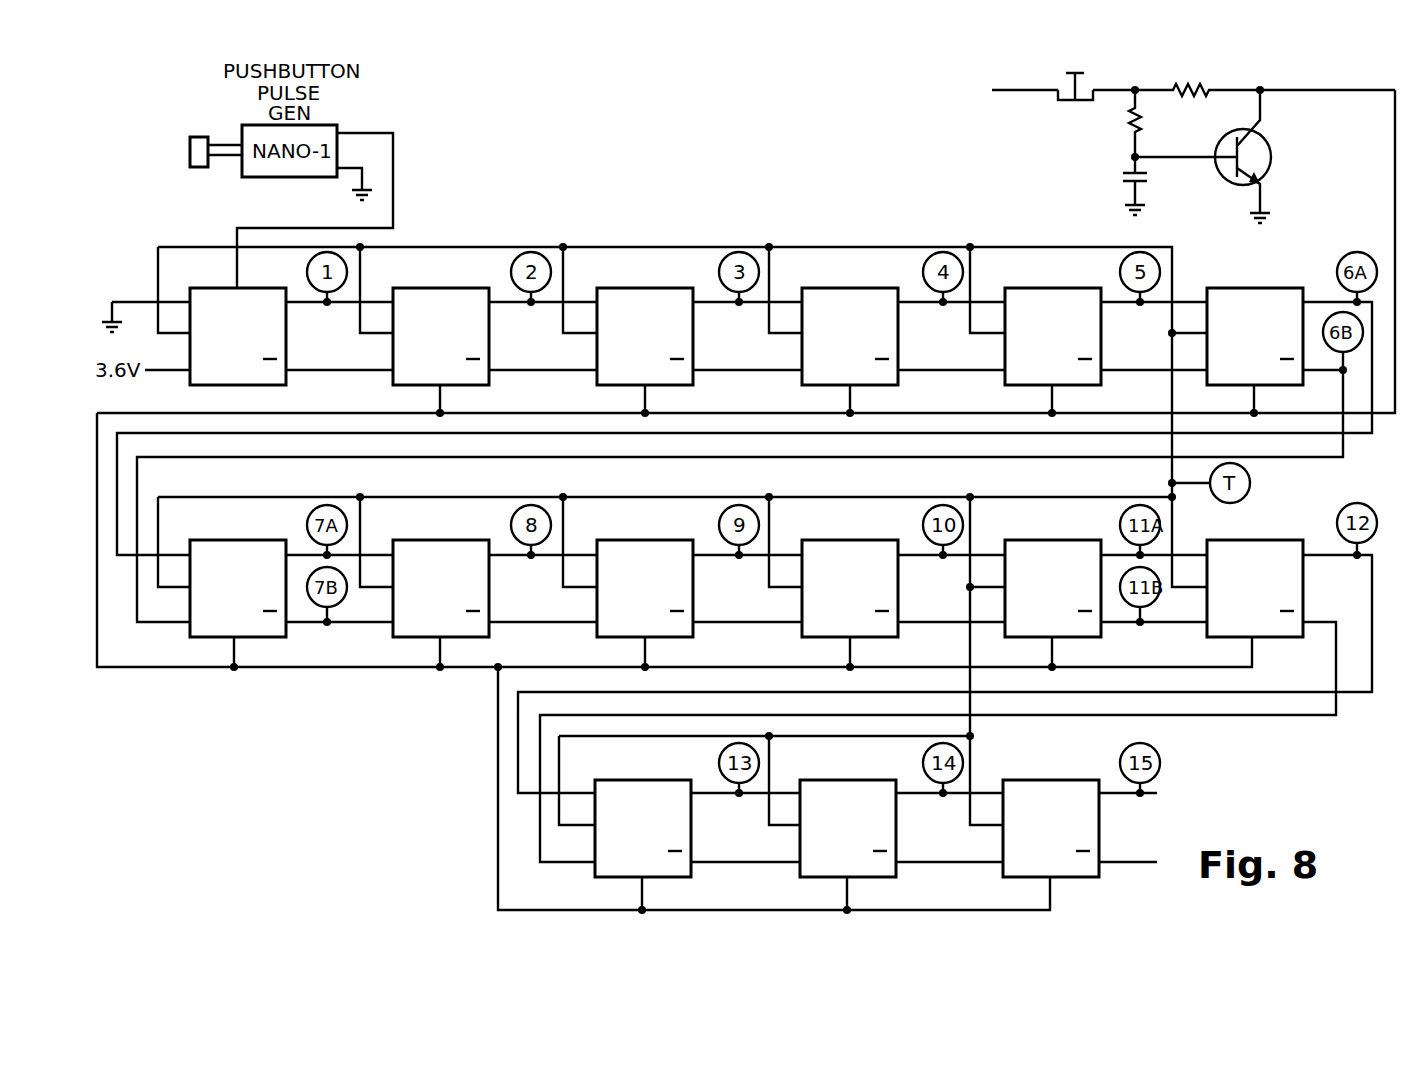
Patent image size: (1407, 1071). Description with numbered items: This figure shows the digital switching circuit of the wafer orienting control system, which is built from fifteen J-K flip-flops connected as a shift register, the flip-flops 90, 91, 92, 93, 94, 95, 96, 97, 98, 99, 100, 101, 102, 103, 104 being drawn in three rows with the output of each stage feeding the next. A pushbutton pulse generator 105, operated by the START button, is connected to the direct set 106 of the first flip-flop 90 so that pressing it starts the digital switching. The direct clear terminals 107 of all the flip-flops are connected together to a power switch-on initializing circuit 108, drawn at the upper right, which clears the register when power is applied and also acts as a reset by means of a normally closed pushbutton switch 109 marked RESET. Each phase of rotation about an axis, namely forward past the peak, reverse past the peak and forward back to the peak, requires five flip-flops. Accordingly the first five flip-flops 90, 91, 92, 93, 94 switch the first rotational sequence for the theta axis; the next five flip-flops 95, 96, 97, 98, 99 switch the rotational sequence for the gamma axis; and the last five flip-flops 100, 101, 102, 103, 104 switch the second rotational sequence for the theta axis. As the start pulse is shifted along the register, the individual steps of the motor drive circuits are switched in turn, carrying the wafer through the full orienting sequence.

The first flip-flop 90 is at (210, 386).
The flip-flop 91 is at (435, 288).
The flip-flop 92 is at (639, 288).
The flip-flop 93 is at (844, 288).
The flip-flop 94 is at (1047, 288).
The flip-flop 95 is at (1249, 288).
The flip-flop 96 is at (232, 540).
The flip-flop 97 is at (435, 540).
The flip-flop 98 is at (639, 540).
The flip-flop 99 is at (844, 540).
The flip-flop 100 is at (1039, 540).
The flip-flop 101 is at (1241, 540).
The flip-flop 102 is at (627, 780).
The flip-flop 103 is at (832, 780).
The flip-flop 104 is at (1035, 780).
The pushbutton pulse generator 105 is at (242, 176).
The direct set 106 is at (233, 287).
The direct clear terminals 107 is at (436, 385).
The power switch-on initializing circuit 108 is at (1238, 81).
The normally closed pushbutton switch 109 is at (1068, 85).